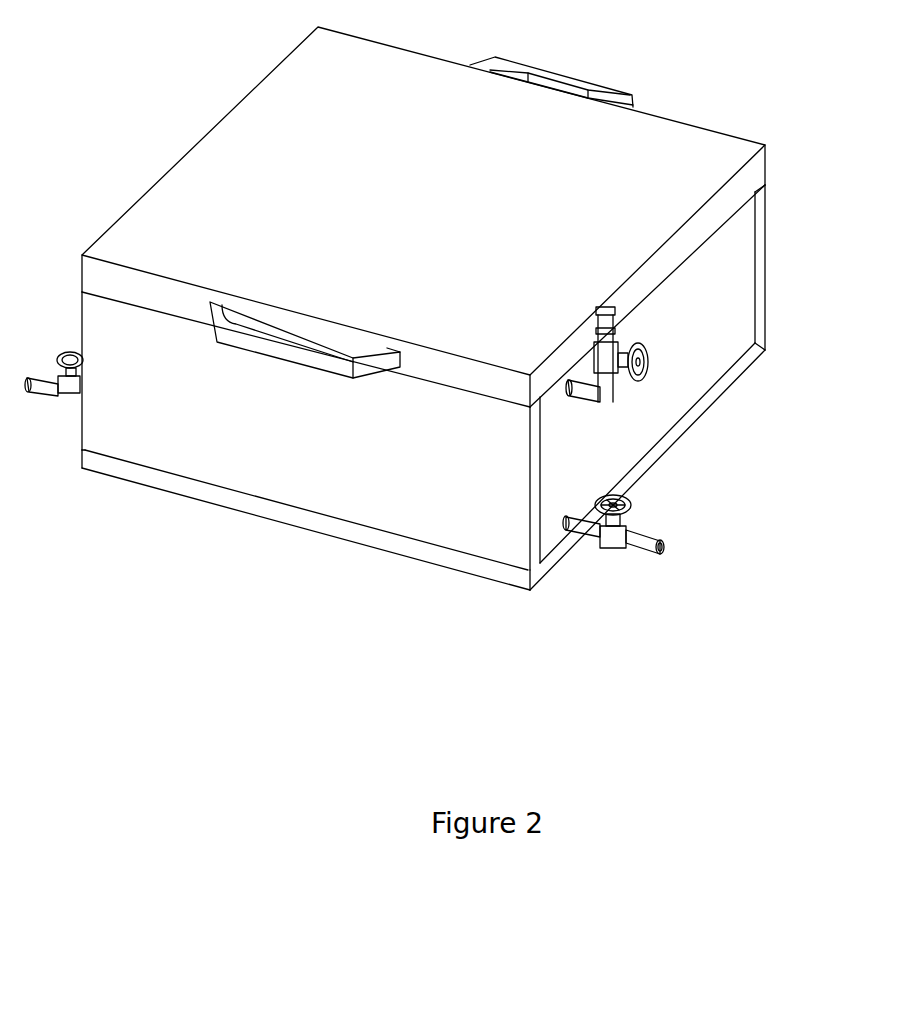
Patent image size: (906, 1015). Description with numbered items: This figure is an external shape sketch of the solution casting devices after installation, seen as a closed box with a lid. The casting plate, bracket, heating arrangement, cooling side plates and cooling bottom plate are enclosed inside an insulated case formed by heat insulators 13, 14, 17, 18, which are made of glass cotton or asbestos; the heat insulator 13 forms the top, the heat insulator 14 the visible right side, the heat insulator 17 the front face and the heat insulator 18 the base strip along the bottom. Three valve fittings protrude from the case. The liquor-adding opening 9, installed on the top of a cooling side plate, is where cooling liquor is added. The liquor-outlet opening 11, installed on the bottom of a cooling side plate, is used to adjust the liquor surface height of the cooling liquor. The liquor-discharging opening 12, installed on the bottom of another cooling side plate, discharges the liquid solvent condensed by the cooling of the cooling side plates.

The liquor-adding opening 9 is at (597, 328).
The liquor-outlet opening 11 is at (638, 557).
The liquor-discharging opening 12 is at (48, 377).
The heat insulator 13 is at (658, 150).
The heat insulator 14 is at (672, 398).
The heat insulator 17 is at (238, 453).
The heat insulator 18 is at (442, 562).